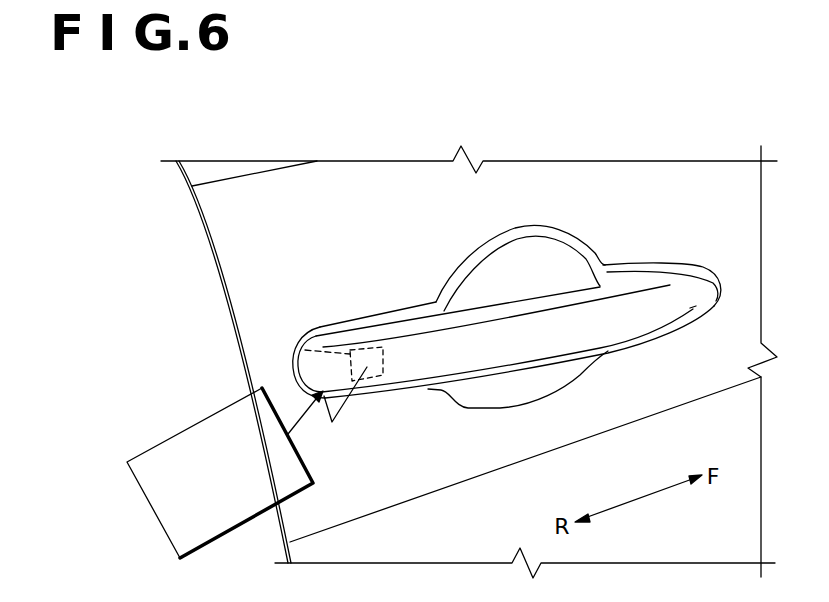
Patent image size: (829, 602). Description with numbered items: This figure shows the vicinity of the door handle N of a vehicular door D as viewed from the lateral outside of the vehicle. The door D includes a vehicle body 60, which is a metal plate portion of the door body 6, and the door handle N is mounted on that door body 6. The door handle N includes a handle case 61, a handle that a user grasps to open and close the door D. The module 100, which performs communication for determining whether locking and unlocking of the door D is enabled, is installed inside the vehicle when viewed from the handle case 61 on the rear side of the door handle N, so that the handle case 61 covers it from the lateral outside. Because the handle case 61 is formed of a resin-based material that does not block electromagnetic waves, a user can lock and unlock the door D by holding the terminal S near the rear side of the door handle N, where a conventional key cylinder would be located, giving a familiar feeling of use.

The door body 6 is at (196, 218).
The vehicle body 60 is at (249, 268).
The handle case 61 is at (448, 357).
The module 100 is at (297, 346).
The door D is at (302, 150).
The door handle N is at (413, 293).
The terminal S is at (175, 453).